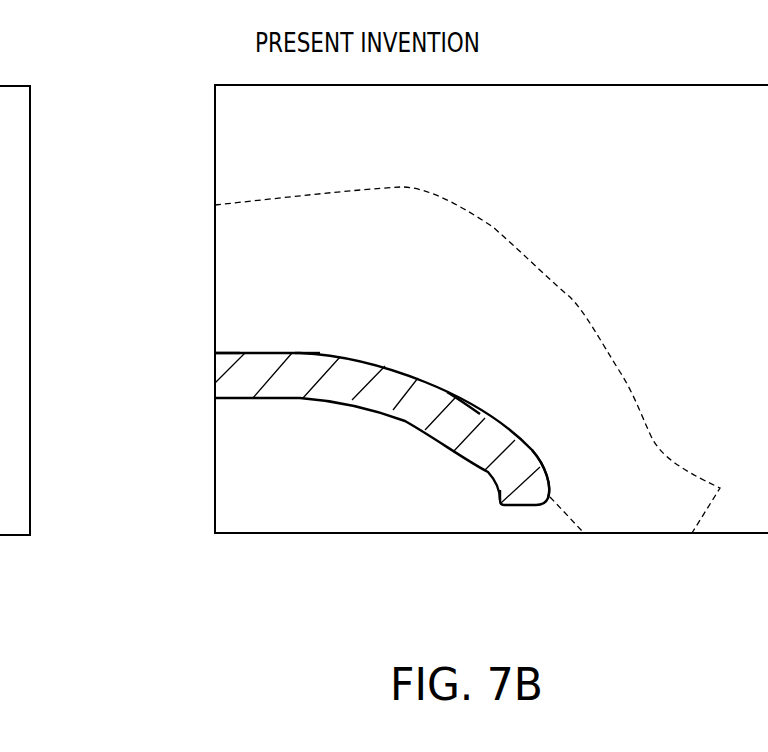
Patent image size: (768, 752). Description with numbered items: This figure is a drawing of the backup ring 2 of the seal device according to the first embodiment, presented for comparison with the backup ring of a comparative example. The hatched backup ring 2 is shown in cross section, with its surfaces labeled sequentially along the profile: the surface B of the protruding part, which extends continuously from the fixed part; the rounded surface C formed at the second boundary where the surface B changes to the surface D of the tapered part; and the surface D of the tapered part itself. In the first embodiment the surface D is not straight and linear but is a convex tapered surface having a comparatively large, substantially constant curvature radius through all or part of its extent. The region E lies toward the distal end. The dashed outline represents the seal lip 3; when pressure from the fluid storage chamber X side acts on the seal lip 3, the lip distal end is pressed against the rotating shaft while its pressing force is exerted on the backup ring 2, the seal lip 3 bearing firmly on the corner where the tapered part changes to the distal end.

The backup ring 2 is at (416, 410).
The seal lip 3 is at (478, 272).
The surface of protruding part B is at (236, 352).
The rounded surface C is at (308, 350).
The surface of tapered part D is at (458, 390).
The point E is at (543, 457).
The fluid storage chamber X is at (711, 178).